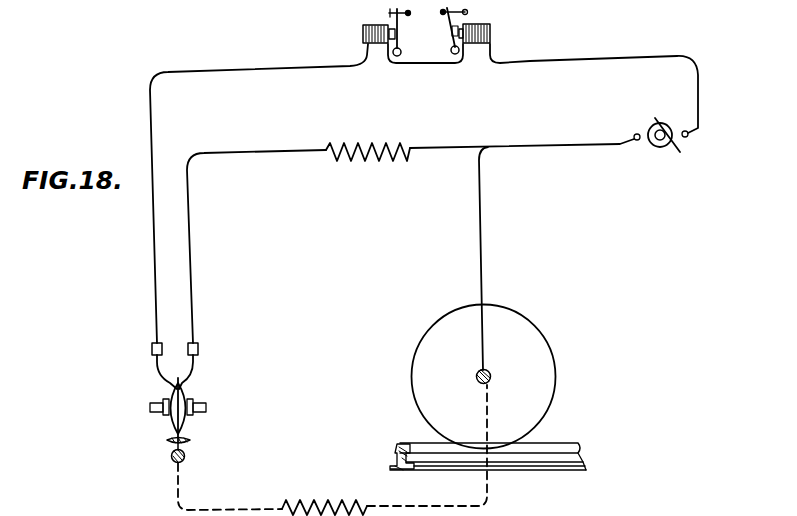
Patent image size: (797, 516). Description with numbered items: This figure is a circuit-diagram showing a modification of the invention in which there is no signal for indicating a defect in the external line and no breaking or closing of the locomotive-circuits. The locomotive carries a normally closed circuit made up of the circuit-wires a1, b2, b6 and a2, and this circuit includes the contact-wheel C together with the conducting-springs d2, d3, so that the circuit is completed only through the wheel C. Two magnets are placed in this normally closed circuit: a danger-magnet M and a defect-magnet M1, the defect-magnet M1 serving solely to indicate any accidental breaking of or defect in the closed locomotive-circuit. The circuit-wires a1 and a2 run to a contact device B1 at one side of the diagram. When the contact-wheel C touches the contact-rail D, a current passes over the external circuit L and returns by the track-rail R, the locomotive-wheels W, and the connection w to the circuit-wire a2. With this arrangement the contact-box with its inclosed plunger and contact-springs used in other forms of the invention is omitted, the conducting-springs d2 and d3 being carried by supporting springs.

The defect-magnet M1 is at (368, 32).
The danger-magnet M is at (490, 28).
The circuit-wire b2 is at (259, 190).
The circuit-wire a1 is at (594, 82).
The circuit-wire b6 is at (298, 232).
The circuit-wire a2 is at (522, 133).
The brush contact B1 is at (661, 143).
The connection w is at (491, 258).
The locomotive-wheels W is at (497, 377).
The track-rail R is at (488, 467).
The external circuit L is at (332, 450).
The contact-wheel C is at (185, 417).
The contact-rail D is at (171, 457).
The conducting-spring d2 is at (157, 366).
The conducting-spring d3 is at (193, 370).